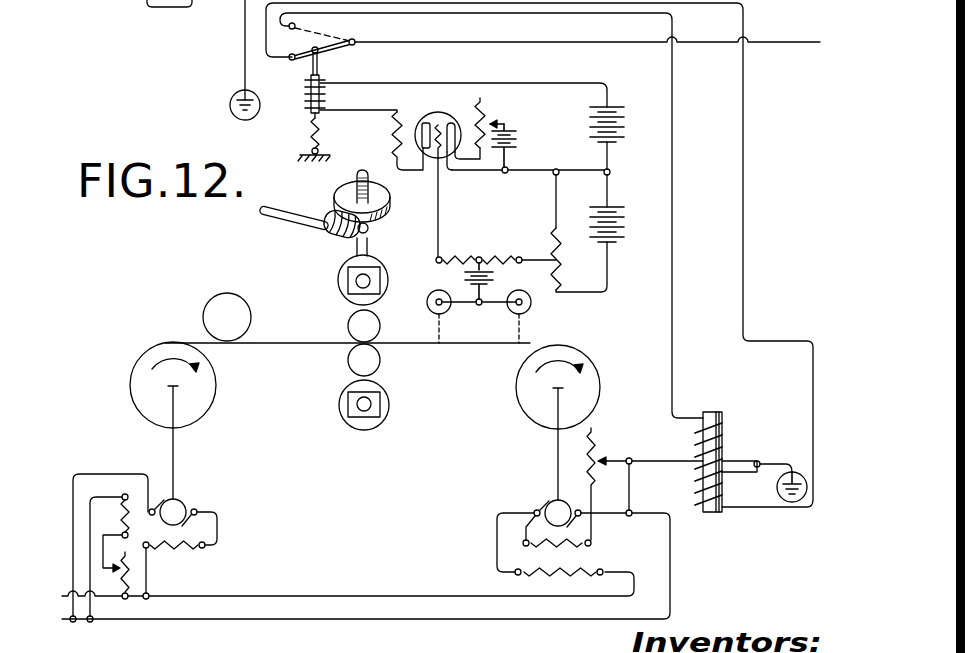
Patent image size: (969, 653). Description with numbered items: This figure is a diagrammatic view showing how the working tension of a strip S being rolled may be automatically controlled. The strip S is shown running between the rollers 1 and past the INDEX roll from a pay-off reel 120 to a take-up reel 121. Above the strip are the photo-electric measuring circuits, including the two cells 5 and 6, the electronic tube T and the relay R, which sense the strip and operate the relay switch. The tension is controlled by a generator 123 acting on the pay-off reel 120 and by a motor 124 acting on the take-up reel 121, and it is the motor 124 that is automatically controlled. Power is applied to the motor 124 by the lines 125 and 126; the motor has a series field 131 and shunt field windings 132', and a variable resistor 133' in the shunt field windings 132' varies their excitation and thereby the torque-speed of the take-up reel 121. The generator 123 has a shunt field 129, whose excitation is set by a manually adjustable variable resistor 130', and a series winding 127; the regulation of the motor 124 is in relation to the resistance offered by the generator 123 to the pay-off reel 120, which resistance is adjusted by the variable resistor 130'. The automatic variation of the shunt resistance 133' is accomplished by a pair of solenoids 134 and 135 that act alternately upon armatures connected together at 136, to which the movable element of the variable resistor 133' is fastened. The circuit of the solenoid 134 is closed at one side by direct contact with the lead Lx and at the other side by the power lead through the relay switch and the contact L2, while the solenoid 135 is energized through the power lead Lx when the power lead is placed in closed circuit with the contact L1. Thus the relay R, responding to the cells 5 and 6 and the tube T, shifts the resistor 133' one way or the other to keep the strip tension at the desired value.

The feed rollers 1 is at (349, 328).
The photo-electric cell 5 is at (431, 311).
The photo-electric cell 6 is at (529, 311).
The pay-off reel 120 is at (135, 373).
The take-up reel 121 is at (594, 371).
The generator 123 is at (181, 500).
The motor 124 is at (548, 504).
The power line 125 is at (318, 598).
The power line 126 is at (333, 621).
The series winding 127 is at (195, 536).
The shunt field 129 is at (122, 522).
The manually adjustable variable resistor 130' is at (167, 575).
The series field 131 is at (528, 566).
The shunt field windings 132' is at (590, 539).
The variable resistor 133' is at (617, 469).
The solenoid 134 is at (722, 512).
The solenoid 135 is at (722, 422).
The armature connection 136 is at (722, 465).
The contact L1 is at (295, 26).
The contact L2 is at (314, 64).
The power lead Lx is at (229, 108).
The relay R is at (321, 98).
The electronic tube T is at (440, 112).
The tape S is at (267, 343).
The index wheel INDEX is at (208, 300).